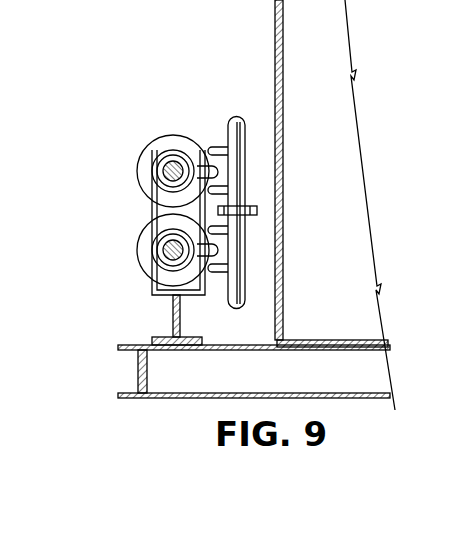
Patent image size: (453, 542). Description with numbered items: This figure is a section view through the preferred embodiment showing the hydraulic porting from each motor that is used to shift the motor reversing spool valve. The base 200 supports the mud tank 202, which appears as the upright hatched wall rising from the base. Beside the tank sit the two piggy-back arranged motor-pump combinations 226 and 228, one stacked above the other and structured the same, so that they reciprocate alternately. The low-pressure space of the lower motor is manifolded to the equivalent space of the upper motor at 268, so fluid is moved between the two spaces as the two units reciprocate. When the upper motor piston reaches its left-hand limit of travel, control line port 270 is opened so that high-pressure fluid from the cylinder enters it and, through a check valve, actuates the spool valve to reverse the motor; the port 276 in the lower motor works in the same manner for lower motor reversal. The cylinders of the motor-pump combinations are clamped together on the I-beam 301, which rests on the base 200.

The base 200 is at (138, 366).
The mud tank 202 is at (366, 158).
The motor-pump combination 226 is at (127, 155).
The motor-pump combination 228 is at (127, 242).
The manifold 268 is at (239, 119).
The control line port 270 is at (208, 166).
The port 276 is at (208, 258).
The I-beam 301 is at (173, 320).